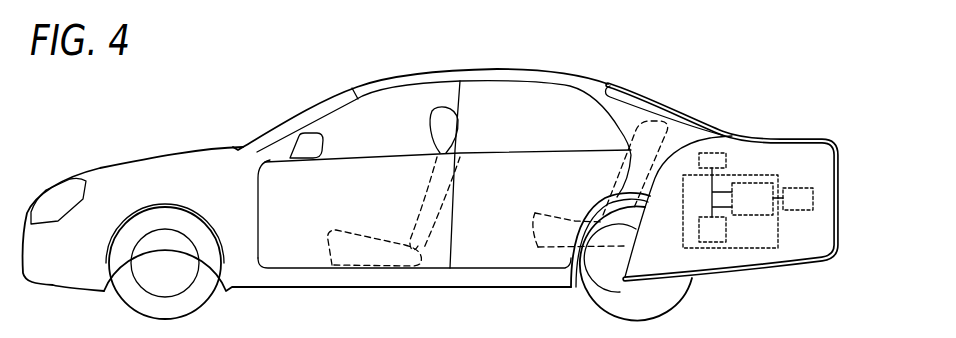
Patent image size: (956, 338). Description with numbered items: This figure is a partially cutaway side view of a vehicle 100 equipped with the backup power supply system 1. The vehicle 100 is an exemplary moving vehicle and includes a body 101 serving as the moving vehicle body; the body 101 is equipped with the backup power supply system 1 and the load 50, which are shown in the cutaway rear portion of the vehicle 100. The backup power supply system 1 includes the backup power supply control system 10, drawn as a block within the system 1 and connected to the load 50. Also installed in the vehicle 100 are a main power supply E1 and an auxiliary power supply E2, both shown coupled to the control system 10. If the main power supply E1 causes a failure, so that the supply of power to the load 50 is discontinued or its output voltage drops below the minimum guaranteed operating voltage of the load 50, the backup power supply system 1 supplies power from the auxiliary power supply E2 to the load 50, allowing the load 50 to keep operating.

The backup power supply system 1 is at (742, 250).
The backup power supply control system 10 is at (755, 187).
The load 50 is at (800, 200).
The vehicle 100 is at (665, 96).
The body 101 is at (535, 77).
The main power supply E1 is at (713, 158).
The auxiliary power supply E2 is at (703, 235).